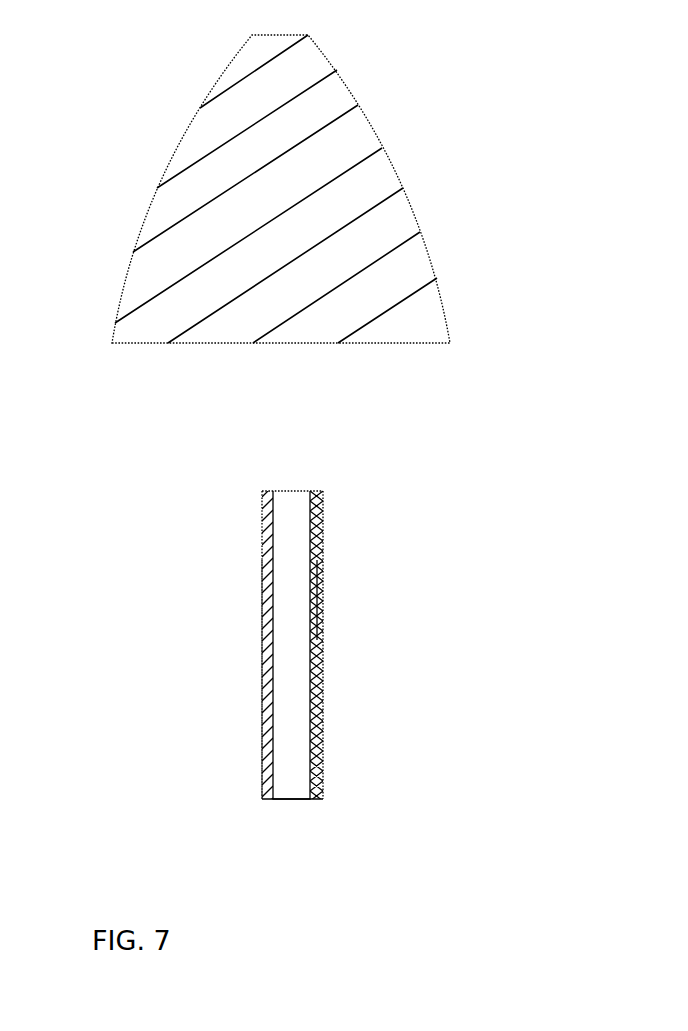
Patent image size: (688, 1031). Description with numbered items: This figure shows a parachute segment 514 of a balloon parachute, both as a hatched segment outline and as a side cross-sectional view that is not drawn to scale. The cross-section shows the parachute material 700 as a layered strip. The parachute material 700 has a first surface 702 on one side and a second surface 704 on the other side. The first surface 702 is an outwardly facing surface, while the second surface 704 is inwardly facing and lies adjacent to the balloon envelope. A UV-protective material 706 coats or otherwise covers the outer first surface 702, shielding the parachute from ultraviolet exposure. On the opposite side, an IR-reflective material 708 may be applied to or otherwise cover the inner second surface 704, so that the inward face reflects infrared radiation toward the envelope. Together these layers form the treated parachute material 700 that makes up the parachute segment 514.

The parachute segment 514 is at (97, 70).
The parachute material 700 is at (293, 662).
The first surface 702 is at (273, 702).
The second surface 704 is at (310, 533).
The UV-protective material 706 is at (262, 770).
The IR-reflective material 708 is at (317, 595).